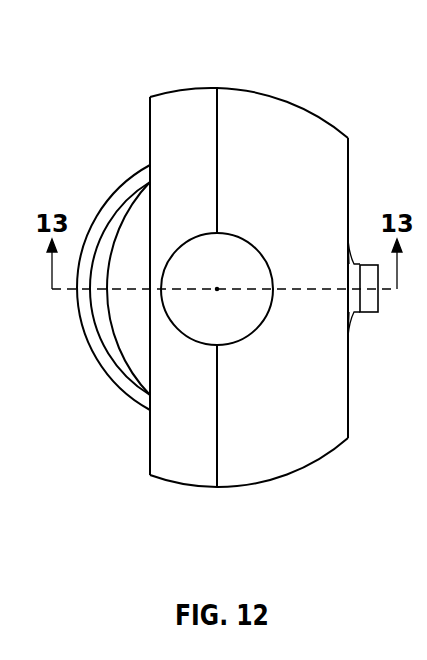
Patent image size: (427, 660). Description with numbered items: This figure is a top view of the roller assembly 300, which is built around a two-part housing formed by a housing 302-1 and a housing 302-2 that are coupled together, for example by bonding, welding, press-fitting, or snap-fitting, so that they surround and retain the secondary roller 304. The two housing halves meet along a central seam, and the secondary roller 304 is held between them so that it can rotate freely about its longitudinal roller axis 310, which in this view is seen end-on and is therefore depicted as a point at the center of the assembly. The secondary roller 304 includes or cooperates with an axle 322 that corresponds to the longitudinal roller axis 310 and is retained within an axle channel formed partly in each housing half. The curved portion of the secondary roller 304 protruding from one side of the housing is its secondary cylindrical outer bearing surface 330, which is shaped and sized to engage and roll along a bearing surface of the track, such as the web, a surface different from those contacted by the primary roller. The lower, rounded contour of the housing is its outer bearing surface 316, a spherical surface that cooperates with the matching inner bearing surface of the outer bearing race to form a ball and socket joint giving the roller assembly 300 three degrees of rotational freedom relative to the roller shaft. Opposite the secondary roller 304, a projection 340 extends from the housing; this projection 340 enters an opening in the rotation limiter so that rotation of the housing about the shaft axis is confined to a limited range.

The roller assembly 300 is at (127, 29).
The housing 302-1 is at (167, 134).
The housing 302-2 is at (295, 129).
The secondary cylindrical outer bearing surface 330 is at (118, 191).
The secondary roller 304 is at (113, 344).
The axle 322 is at (238, 262).
The longitudinal roller axis 310 is at (220, 291).
The projection 340 is at (368, 313).
The outer bearing surface 316 is at (188, 436).